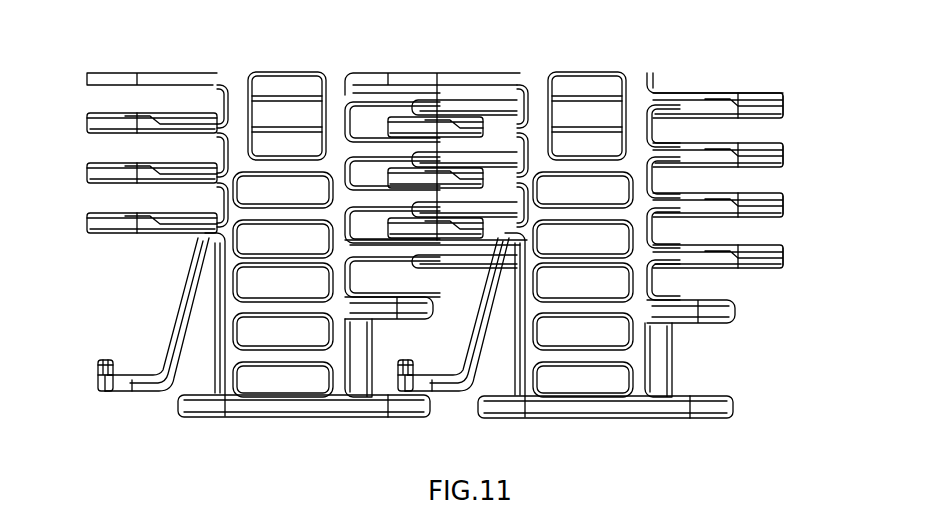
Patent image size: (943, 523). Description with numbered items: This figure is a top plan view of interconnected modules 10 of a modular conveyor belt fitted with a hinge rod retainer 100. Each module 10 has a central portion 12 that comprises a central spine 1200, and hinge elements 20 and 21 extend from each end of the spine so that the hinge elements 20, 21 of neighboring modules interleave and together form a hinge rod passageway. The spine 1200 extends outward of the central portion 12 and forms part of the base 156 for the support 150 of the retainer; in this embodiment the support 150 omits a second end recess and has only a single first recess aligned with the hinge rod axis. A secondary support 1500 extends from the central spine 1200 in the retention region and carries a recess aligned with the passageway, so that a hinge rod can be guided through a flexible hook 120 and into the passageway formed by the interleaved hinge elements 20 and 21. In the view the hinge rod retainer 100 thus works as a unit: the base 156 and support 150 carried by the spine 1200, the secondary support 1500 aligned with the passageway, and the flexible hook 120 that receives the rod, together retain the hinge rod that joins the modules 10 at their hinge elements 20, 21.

The module 10 is at (238, 58).
The central portion 12 is at (72, 245).
The hinge element 20 is at (92, 240).
The hinge element 21 is at (783, 155).
The hinge rod retainer 100 is at (140, 415).
The flexible hook 120 is at (171, 323).
The support 150 is at (280, 410).
The base 156 is at (218, 348).
The central spine 1200 is at (330, 78).
The secondary support 1500 is at (415, 298).